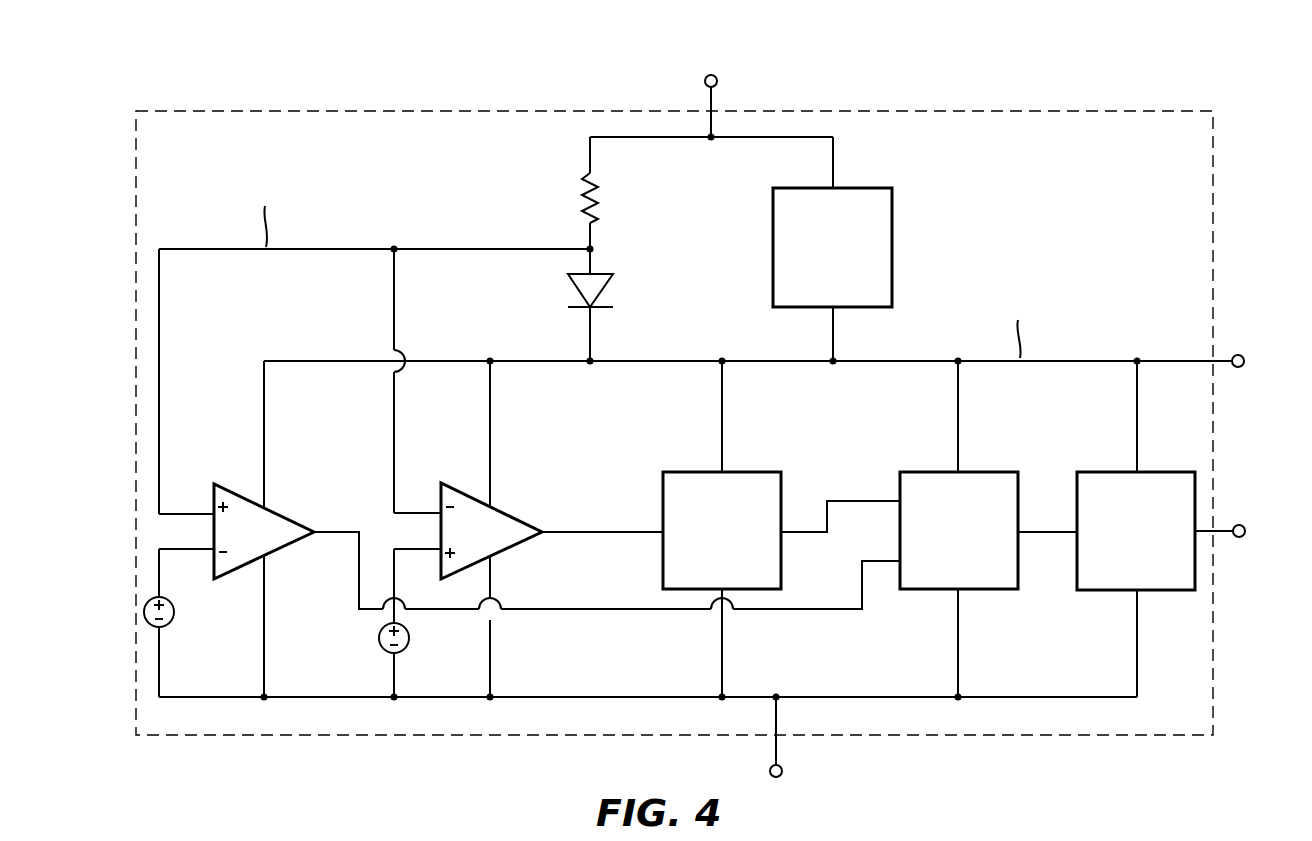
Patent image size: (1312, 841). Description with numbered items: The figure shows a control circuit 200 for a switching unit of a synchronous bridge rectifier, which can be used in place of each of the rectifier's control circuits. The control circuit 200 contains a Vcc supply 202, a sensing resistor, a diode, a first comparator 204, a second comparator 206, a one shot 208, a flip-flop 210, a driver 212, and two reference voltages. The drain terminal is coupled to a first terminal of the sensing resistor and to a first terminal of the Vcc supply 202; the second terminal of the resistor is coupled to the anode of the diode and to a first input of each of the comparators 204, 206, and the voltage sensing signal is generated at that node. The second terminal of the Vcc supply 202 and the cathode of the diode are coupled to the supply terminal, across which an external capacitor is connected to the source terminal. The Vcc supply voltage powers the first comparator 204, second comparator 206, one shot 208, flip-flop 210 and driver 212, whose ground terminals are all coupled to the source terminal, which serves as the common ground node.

The control circuit 200 is at (1093, 109).
The Vcc supply 202 is at (832, 249).
The first comparator 204 is at (285, 512).
The second comparator 206 is at (513, 515).
The one shot 208 is at (722, 529).
The flip-flop 210 is at (959, 529).
The driver 212 is at (1136, 529).